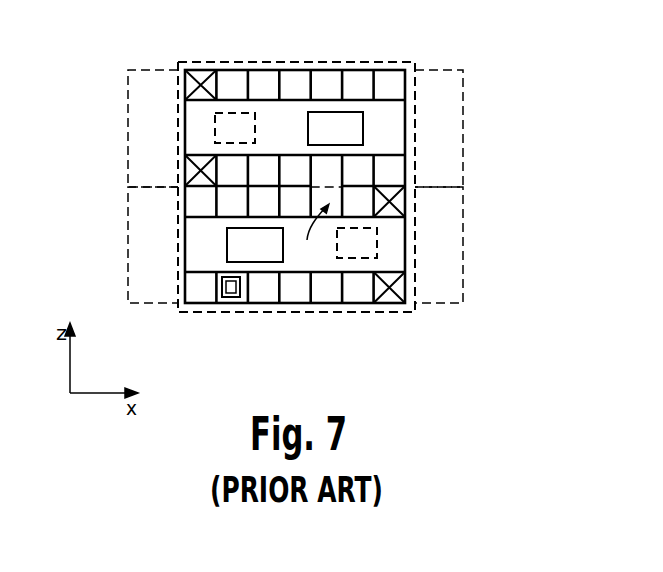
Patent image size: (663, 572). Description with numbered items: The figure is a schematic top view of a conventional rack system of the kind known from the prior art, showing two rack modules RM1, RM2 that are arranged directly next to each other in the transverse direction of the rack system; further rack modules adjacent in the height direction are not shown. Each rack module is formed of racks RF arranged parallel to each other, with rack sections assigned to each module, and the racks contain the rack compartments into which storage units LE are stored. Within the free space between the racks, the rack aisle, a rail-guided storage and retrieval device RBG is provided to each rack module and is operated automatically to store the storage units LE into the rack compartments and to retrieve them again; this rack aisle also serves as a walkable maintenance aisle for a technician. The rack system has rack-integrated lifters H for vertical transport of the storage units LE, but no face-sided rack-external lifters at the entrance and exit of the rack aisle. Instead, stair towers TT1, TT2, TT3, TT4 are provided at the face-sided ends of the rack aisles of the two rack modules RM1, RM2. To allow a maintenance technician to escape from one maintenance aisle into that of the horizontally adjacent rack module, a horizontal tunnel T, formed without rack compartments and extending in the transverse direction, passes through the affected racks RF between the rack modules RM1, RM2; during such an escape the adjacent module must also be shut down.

The rack-integrated lifter H is at (199, 68).
The rack RF is at (390, 70).
The storage and retrieval device RBG is at (295, 187).
The storage unit LE is at (231, 305).
The horizontal tunnel T is at (312, 235).
The stair tower TT1 is at (463, 103).
The stair tower TT2 is at (128, 113).
The stair tower TT3 is at (463, 270).
The stair tower TT4 is at (128, 248).
The rack module RM1 is at (415, 133).
The rack module RM2 is at (415, 243).